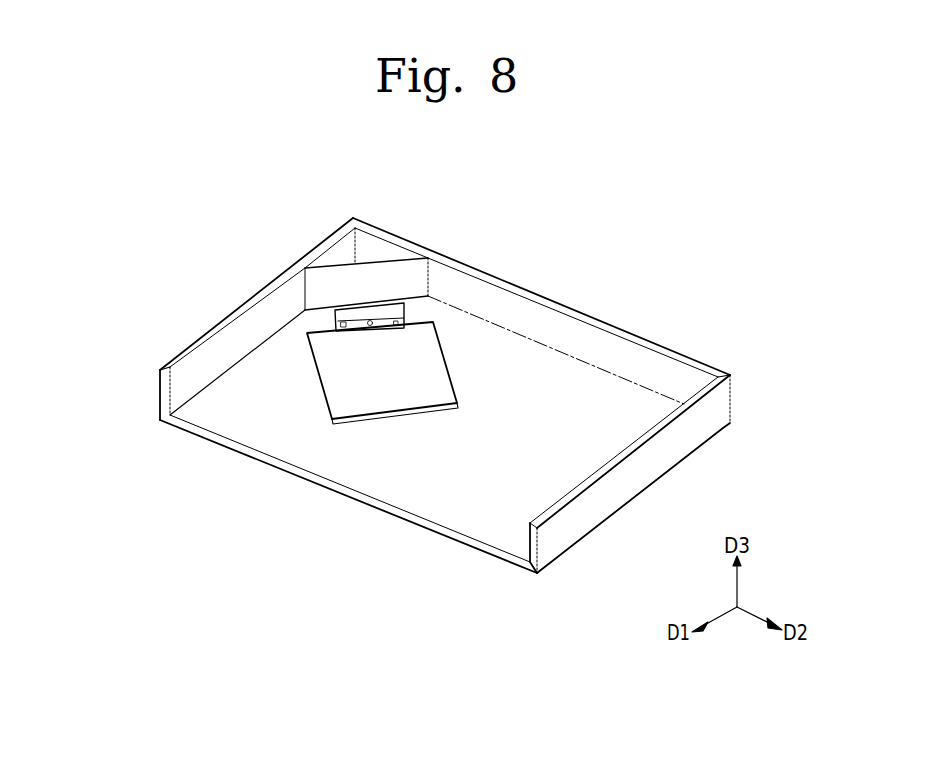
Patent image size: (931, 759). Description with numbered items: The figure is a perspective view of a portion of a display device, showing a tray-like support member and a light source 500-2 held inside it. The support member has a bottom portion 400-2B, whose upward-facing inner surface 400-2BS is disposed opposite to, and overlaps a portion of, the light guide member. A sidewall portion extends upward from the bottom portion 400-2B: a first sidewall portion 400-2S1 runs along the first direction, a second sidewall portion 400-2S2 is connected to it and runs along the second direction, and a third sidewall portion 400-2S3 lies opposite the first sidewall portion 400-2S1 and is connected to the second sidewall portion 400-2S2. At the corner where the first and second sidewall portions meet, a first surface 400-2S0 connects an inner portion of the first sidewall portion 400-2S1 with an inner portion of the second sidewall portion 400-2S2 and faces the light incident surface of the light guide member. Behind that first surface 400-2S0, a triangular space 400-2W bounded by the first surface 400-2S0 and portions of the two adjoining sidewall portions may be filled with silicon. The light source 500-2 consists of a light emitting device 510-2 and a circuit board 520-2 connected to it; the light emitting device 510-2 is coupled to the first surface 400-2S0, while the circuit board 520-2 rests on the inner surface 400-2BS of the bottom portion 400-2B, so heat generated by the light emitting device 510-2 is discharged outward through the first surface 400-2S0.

The space 400-2W is at (346, 244).
The first surface 400-2S0 is at (402, 275).
The first sidewall portion 400-2S1 is at (205, 337).
The second sidewall portion 400-2S2 is at (632, 338).
The third sidewall portion 400-2S3 is at (673, 413).
The inner surface 400-2BS is at (433, 495).
The bottom portion 400-2B is at (478, 548).
The light source 500-2 is at (338, 441).
The light emitting device 510-2 is at (340, 323).
The circuit board 520-2 is at (380, 392).